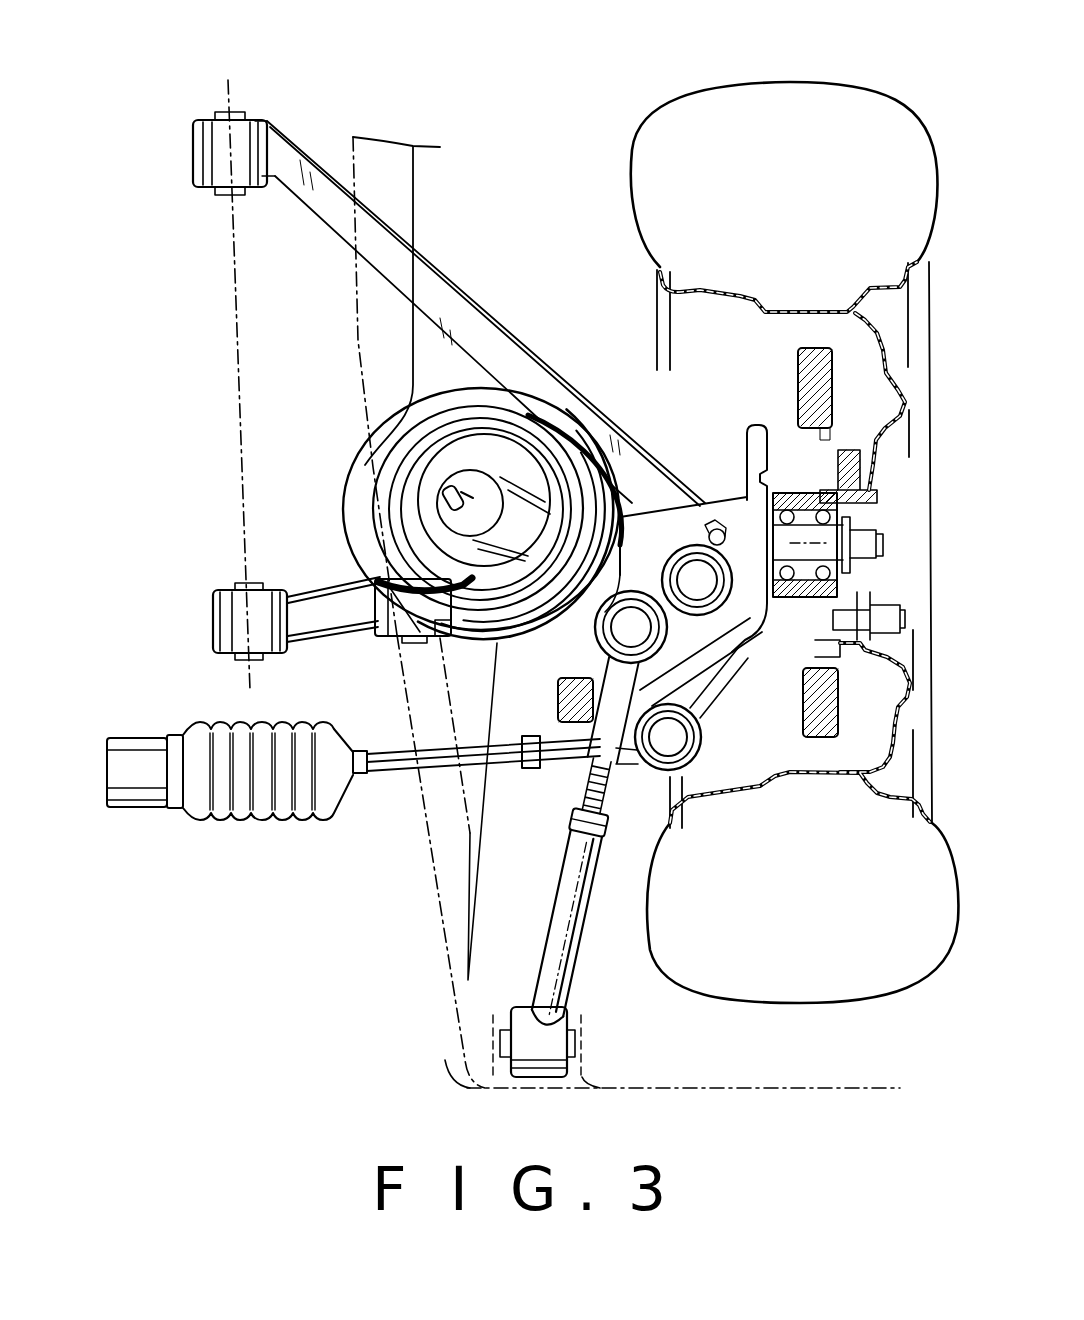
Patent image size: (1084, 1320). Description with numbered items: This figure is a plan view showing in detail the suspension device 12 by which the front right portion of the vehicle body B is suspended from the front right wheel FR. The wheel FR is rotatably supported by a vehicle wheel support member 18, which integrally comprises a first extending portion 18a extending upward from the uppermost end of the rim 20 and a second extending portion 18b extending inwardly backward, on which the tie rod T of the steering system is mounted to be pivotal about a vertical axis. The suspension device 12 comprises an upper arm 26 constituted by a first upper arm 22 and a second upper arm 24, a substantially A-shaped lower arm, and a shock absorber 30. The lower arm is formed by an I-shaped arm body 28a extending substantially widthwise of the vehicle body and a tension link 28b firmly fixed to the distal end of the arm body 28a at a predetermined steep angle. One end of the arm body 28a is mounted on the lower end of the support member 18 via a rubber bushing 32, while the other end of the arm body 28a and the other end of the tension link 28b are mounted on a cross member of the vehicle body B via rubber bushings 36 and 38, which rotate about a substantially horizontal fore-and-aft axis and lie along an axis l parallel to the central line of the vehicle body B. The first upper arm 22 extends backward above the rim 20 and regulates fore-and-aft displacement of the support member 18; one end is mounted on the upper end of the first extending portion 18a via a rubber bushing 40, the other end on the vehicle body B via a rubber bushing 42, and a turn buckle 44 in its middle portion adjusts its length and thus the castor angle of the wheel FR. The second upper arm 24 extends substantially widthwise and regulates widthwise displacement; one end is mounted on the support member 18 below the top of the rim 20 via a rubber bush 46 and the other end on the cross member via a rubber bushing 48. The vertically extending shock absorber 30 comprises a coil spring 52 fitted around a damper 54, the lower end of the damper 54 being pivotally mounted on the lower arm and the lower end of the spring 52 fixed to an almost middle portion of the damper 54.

The suspension device 12 is at (556, 341).
The vehicle wheel support member 18 is at (742, 650).
The first extending portion 18a is at (556, 688).
The second extending portion 18b is at (706, 695).
The rim 20 is at (730, 292).
The first upper arm 22 is at (548, 950).
The second upper arm 24 is at (612, 630).
The upper arm 26 is at (470, 833).
The arm body 28a is at (318, 598).
The tension link 28b is at (636, 470).
The shock absorber 30 is at (480, 372).
The rubber bushing 32 is at (722, 500).
The rubber bushing 36 is at (276, 656).
The rubber bushing 38 is at (258, 122).
The rubber bushing 40 is at (740, 630).
The rubber bushing 42 is at (560, 1062).
The turn buckle 44 is at (583, 795).
The rubber bush 46 is at (678, 575).
The rubber bushing 48 is at (388, 638).
The coil spring 52 is at (578, 428).
The damper 54 is at (487, 495).
The tie rod T is at (404, 788).
The vehicle body B is at (787, 1086).
The front right wheel FR is at (758, 82).
The axis l is at (237, 420).